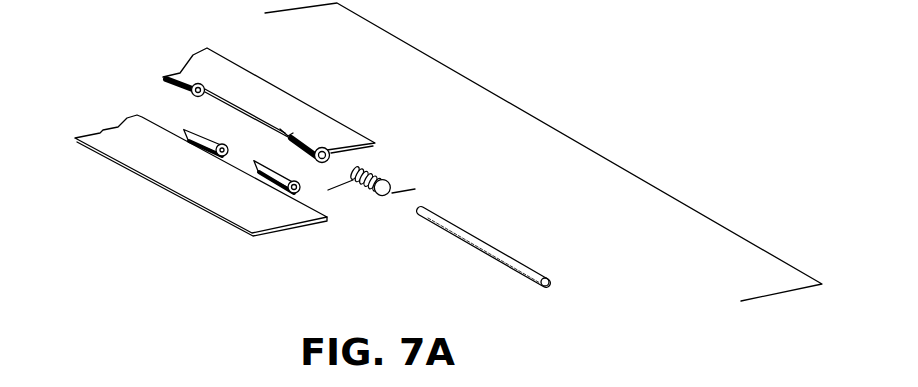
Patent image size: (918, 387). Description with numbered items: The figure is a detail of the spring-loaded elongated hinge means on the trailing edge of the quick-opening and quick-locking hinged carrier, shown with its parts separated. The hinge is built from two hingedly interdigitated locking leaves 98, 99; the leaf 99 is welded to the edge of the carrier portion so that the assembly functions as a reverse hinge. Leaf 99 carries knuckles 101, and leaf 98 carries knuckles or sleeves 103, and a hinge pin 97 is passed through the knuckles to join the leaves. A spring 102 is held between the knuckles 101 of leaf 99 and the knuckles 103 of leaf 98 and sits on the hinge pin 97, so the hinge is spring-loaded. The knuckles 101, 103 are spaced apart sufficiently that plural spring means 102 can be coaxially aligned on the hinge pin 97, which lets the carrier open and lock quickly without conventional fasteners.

The hinge pin 97 is at (489, 240).
The locking leaf 98 is at (257, 66).
The locking leaf 99 is at (186, 180).
The knuckles 101 is at (300, 190).
The spring 102 is at (378, 174).
The knuckles 103 is at (176, 89).